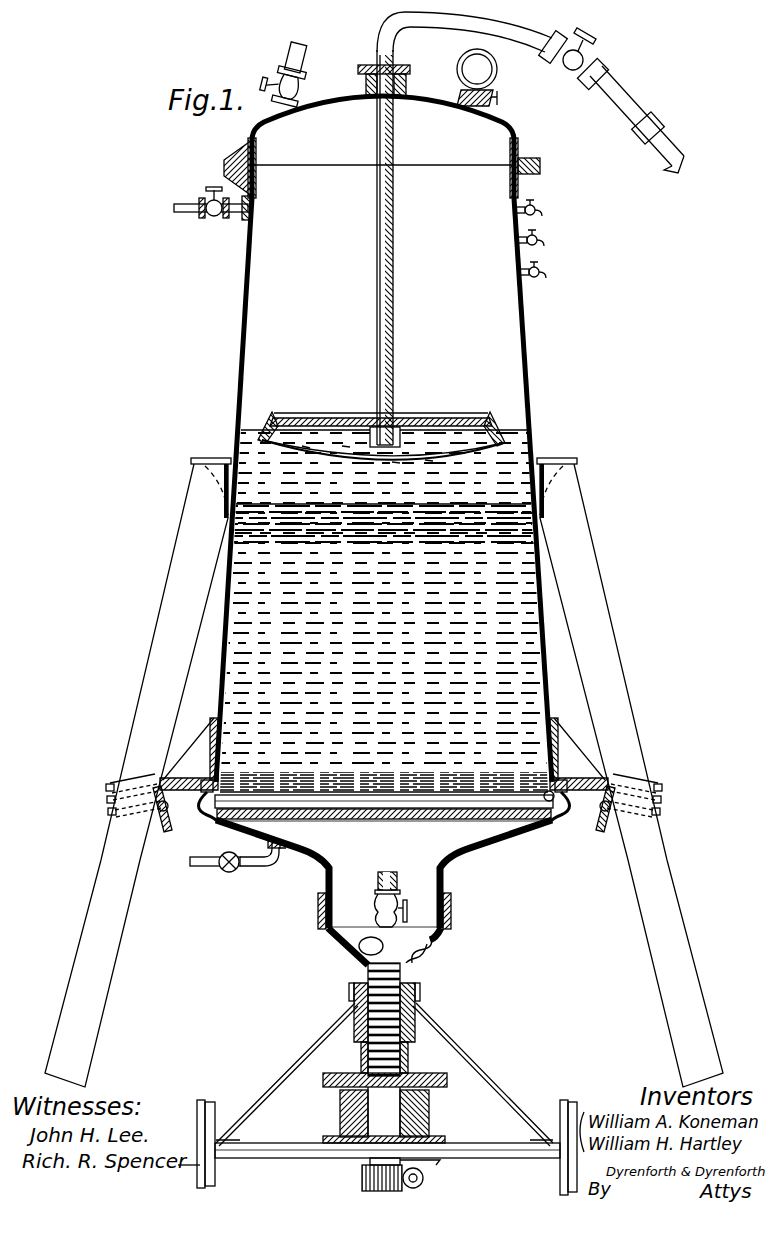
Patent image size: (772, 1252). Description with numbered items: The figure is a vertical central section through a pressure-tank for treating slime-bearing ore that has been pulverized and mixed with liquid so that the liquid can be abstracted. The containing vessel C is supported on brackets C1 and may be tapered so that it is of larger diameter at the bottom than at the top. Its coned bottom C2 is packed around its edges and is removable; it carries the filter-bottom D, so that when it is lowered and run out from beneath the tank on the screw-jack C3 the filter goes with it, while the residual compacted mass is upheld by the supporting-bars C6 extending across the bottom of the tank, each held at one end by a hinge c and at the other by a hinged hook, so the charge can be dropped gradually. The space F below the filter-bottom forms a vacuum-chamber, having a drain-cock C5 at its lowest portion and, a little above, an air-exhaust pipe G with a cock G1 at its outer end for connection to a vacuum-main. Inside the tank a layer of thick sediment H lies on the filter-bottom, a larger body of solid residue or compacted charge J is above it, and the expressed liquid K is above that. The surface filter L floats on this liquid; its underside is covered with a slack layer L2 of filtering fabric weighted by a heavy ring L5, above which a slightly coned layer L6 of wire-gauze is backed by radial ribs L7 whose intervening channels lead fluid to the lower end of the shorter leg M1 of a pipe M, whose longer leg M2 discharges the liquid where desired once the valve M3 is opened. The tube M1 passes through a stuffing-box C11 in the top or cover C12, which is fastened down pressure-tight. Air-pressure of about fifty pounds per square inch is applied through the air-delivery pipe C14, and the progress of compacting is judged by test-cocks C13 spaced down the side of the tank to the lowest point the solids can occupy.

The containing vessel C is at (241, 356).
The brackets C1 is at (215, 460).
The coned bottom C2 is at (497, 852).
The screw-jack C3 is at (418, 957).
The drain-cock C5 is at (376, 905).
The supporting-bars C6 is at (384, 796).
The stuffing-box C11 is at (410, 87).
The top or cover C12 is at (192, 222).
The test-cocks C13 is at (544, 212).
The air-delivery pipe C14 is at (280, 48).
The pipe M is at (481, 22).
The shorter leg of pipe M M1 is at (394, 362).
The longer leg of pipe M M2 is at (612, 95).
The valve of pipe M M3 is at (596, 60).
The surface filter L is at (381, 418).
The slack layer of filtering fabric L2 is at (428, 460).
The heavy ring L5 is at (395, 462).
The layer or screen of wire-gauze L6 is at (305, 450).
The radial ribs L7 is at (345, 445).
The expressed liquid K is at (425, 455).
The compacted charge J is at (384, 601).
The layer of thick sediment H is at (354, 786).
The filter-bottom D is at (278, 816).
The vacuum-chamber F is at (384, 837).
The air-exhaust pipe G is at (268, 868).
The cock G1 is at (222, 872).
The hinge c is at (556, 790).